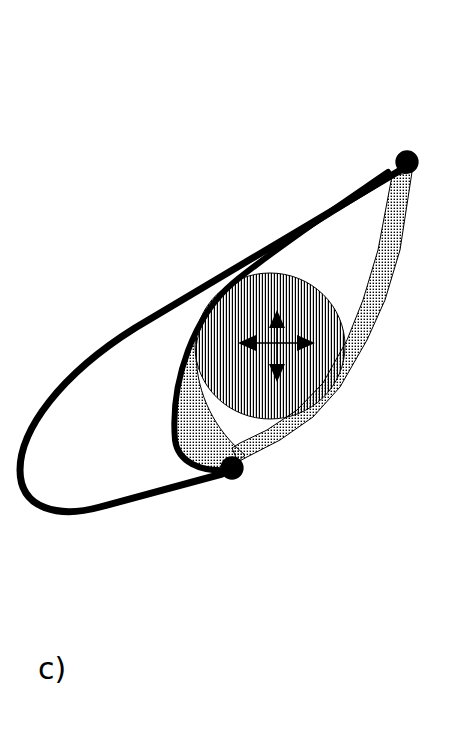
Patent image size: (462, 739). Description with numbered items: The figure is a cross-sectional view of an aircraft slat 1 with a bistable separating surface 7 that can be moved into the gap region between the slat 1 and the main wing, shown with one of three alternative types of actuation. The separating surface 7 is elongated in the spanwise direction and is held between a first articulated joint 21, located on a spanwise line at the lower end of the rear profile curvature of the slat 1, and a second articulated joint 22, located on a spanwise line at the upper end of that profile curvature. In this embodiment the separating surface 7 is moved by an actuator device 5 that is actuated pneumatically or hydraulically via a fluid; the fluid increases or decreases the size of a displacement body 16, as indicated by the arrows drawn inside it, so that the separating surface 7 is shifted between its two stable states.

The slat 1 is at (85, 365).
The actuator device 5 is at (293, 393).
The separating surface 7 is at (307, 247).
The displacement body 16 is at (343, 320).
The first articulated joint 21 is at (240, 480).
The second articulated joint 22 is at (400, 150).